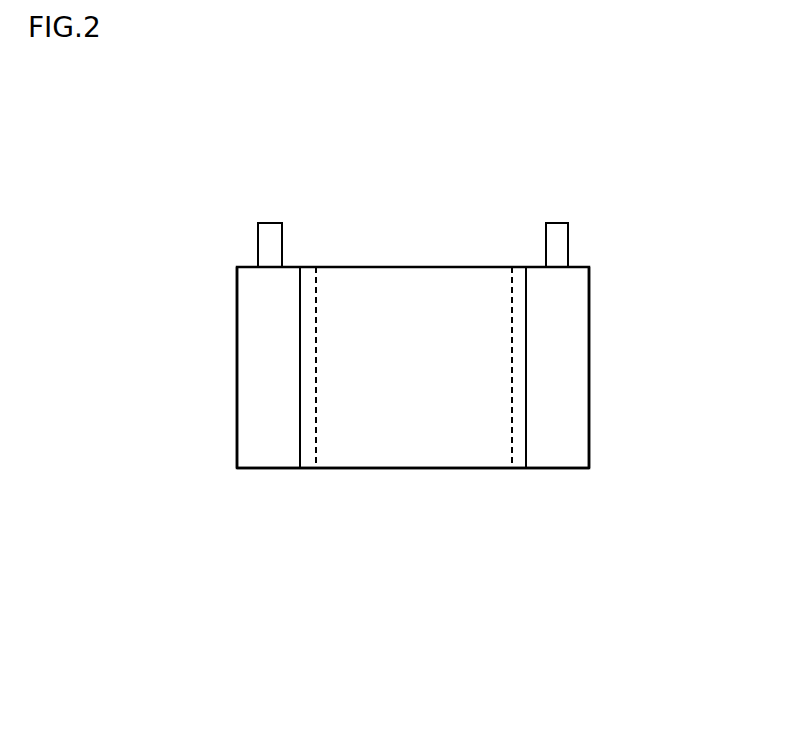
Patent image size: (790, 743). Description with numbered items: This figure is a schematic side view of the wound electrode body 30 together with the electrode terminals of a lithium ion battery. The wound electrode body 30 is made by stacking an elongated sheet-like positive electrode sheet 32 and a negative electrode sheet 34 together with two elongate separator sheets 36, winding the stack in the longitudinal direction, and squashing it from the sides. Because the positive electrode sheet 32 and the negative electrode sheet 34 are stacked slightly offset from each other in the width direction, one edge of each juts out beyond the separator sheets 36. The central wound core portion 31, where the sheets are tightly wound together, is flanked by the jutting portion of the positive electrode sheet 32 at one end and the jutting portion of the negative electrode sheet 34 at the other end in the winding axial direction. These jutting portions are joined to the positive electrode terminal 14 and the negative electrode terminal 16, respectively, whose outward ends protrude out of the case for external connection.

The wound electrode body 30 is at (489, 258).
The wound core portion 31 is at (411, 452).
The positive electrode sheet 32 is at (565, 425).
The negative electrode sheet 34 is at (248, 410).
The separator sheet 36 is at (352, 277).
The positive electrode terminal 14 is at (568, 232).
The negative electrode terminal 16 is at (282, 230).